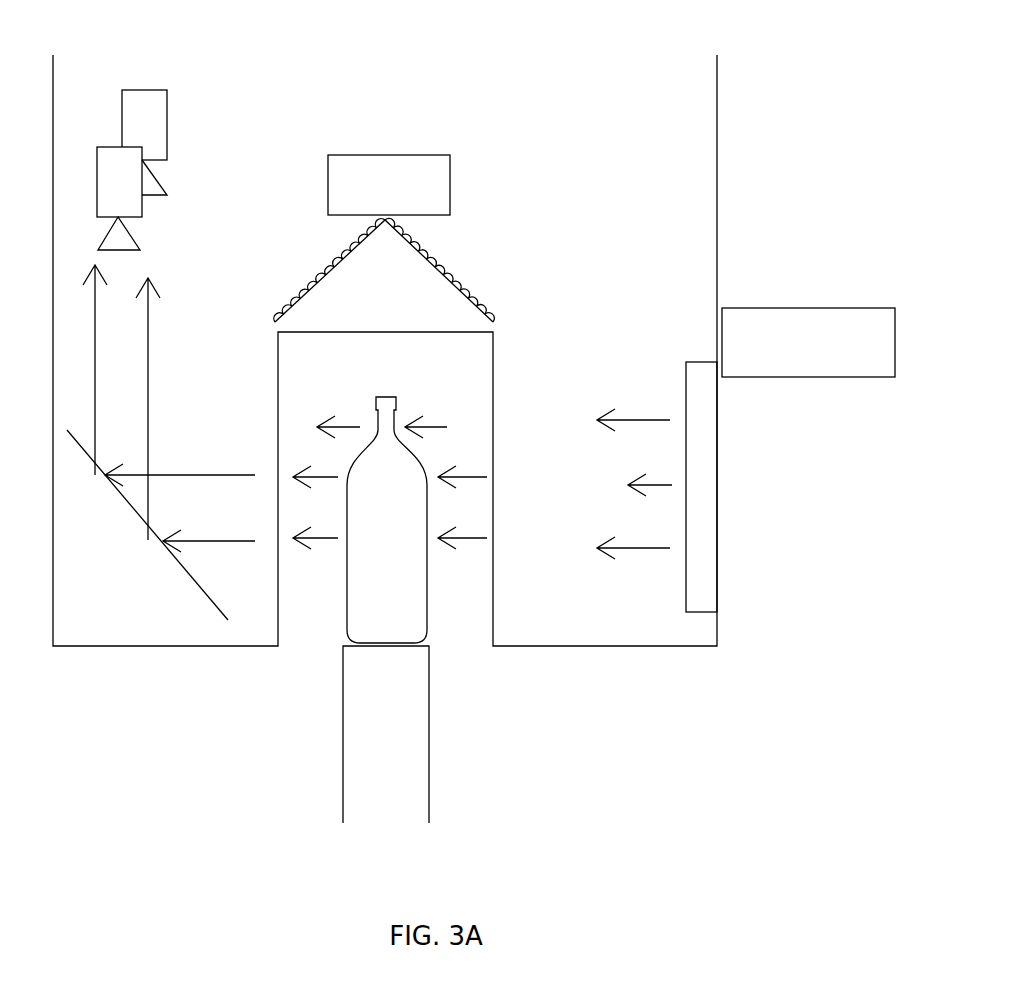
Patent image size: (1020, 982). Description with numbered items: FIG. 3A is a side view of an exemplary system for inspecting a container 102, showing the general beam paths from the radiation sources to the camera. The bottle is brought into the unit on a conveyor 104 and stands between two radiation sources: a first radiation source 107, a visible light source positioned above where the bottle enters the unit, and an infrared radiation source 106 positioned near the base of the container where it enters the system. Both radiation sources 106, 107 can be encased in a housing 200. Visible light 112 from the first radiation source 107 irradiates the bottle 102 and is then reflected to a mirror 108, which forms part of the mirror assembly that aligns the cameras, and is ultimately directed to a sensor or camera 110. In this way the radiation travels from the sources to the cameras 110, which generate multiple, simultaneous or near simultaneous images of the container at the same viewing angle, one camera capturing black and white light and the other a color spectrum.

The container 102 is at (420, 607).
The conveyor 104 is at (415, 780).
The infrared radiation source 106 is at (700, 500).
The first radiation source 107 is at (440, 268).
The mirror assembly 108 is at (202, 592).
The camera 110 is at (104, 148).
The visible light 112 is at (177, 475).
The housing 200 is at (717, 188).